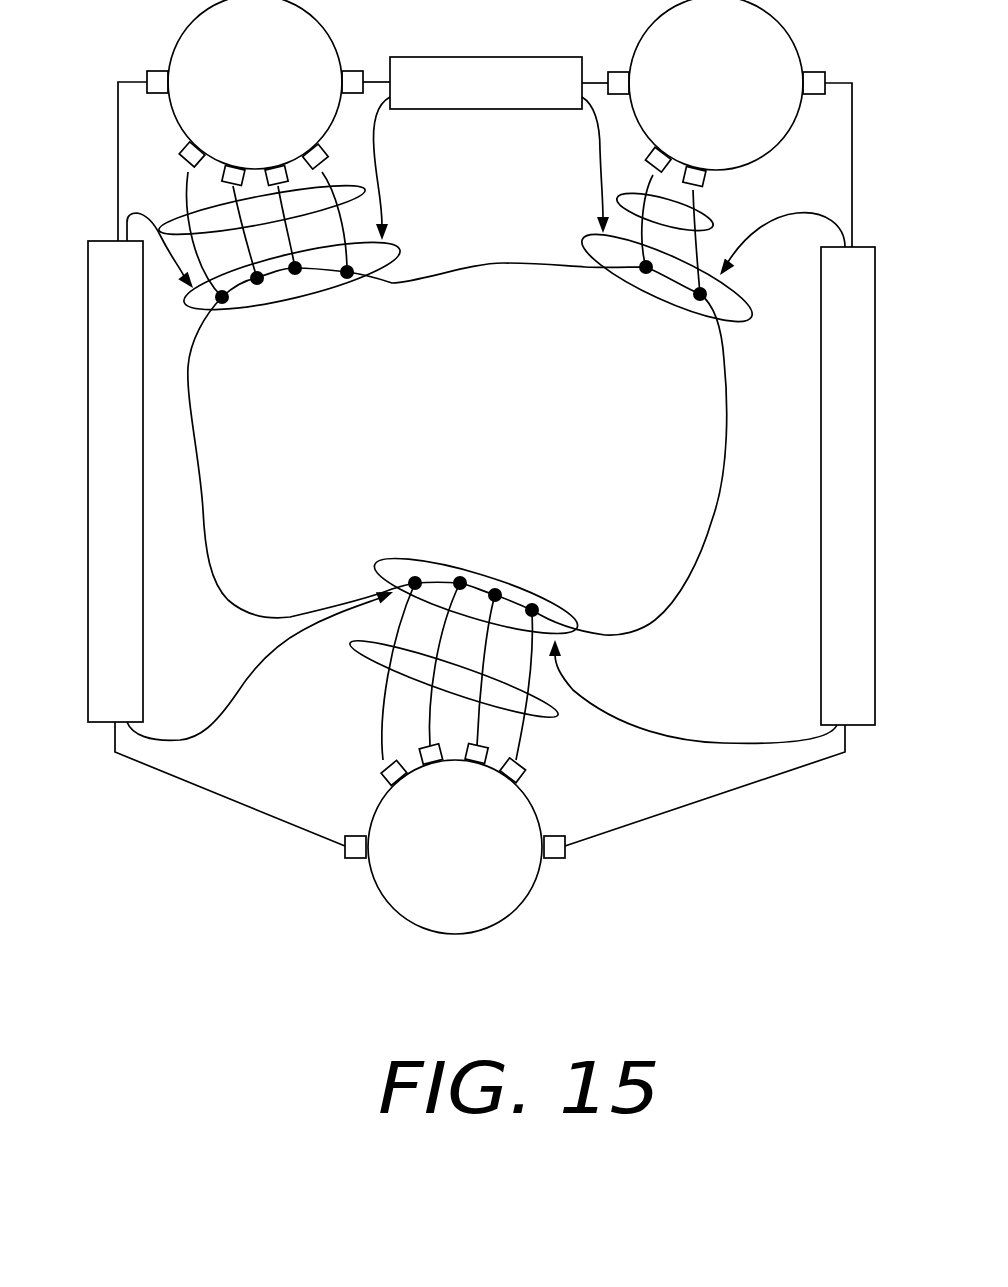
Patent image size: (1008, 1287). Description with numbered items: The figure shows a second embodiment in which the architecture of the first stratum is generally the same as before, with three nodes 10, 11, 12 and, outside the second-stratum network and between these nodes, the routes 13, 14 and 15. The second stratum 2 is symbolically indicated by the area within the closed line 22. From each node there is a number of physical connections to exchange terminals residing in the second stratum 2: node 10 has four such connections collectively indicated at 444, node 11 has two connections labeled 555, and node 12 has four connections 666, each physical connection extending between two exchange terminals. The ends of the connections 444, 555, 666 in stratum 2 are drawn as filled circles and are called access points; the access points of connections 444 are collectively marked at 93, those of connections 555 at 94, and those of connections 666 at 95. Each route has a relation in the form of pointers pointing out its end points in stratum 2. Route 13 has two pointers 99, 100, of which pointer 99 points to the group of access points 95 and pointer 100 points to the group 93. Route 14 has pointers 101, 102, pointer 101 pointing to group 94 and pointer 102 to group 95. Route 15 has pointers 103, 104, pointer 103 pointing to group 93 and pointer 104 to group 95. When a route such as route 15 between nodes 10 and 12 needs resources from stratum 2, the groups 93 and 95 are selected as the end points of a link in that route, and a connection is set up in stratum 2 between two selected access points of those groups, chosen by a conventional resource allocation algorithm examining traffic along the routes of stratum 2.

The stratum 2 is at (457, 449).
The node 10 is at (255, 93).
The node 11 is at (716, 93).
The node 12 is at (455, 838).
The route 13 is at (472, 55).
The route 14 is at (875, 480).
The route 15 is at (88, 462).
The closed line 22 is at (660, 545).
The group of access points 93 is at (293, 302).
The group of access points 94 is at (688, 312).
The group of access points 95 is at (463, 547).
The pointer 99 is at (600, 180).
The pointer 100 is at (380, 173).
The pointer 101 is at (782, 247).
The pointer 102 is at (708, 740).
The pointer 103 is at (130, 212).
The pointer 104 is at (213, 722).
The physical connections 444 is at (175, 220).
The physical connections 555 is at (710, 215).
The physical connections 666 is at (363, 653).